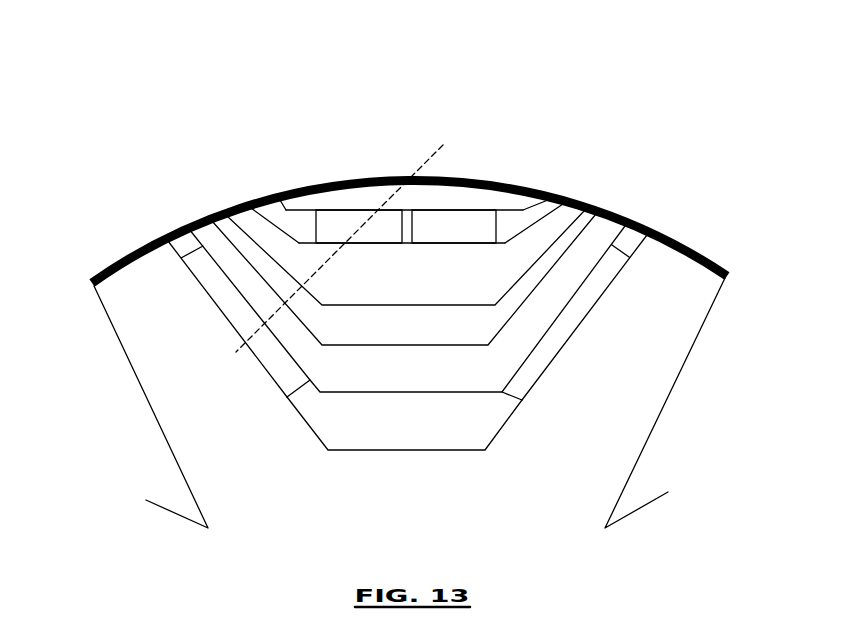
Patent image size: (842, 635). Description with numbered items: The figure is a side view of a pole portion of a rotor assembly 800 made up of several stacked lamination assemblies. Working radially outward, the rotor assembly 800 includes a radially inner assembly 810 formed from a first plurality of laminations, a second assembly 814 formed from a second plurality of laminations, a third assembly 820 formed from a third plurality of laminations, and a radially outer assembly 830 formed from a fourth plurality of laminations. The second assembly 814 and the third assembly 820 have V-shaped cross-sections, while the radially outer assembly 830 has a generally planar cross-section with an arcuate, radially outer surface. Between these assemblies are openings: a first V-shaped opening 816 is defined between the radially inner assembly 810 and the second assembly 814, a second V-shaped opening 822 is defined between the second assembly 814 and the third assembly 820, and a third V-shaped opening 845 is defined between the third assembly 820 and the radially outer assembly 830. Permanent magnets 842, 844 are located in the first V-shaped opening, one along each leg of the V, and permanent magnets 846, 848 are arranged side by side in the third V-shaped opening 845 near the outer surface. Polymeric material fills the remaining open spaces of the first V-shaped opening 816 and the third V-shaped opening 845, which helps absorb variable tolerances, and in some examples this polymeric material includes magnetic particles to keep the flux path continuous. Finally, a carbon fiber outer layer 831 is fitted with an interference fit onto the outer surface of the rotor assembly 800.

The rotor assembly 800 is at (398, 330).
The radially inner assembly 810 is at (409, 403).
The second assembly 814 is at (406, 377).
The first V-shaped opening 816 is at (404, 423).
The third assembly 820 is at (406, 257).
The second V-shaped opening 822 is at (404, 279).
The radially outer assembly 830 is at (404, 214).
The carbon fiber outer layer 831 is at (148, 234).
The permanent magnet 842 is at (217, 284).
The permanent magnet 844 is at (590, 292).
The third V-shaped opening 845 is at (302, 222).
The permanent magnet 846 is at (355, 238).
The permanent magnet 848 is at (472, 238).